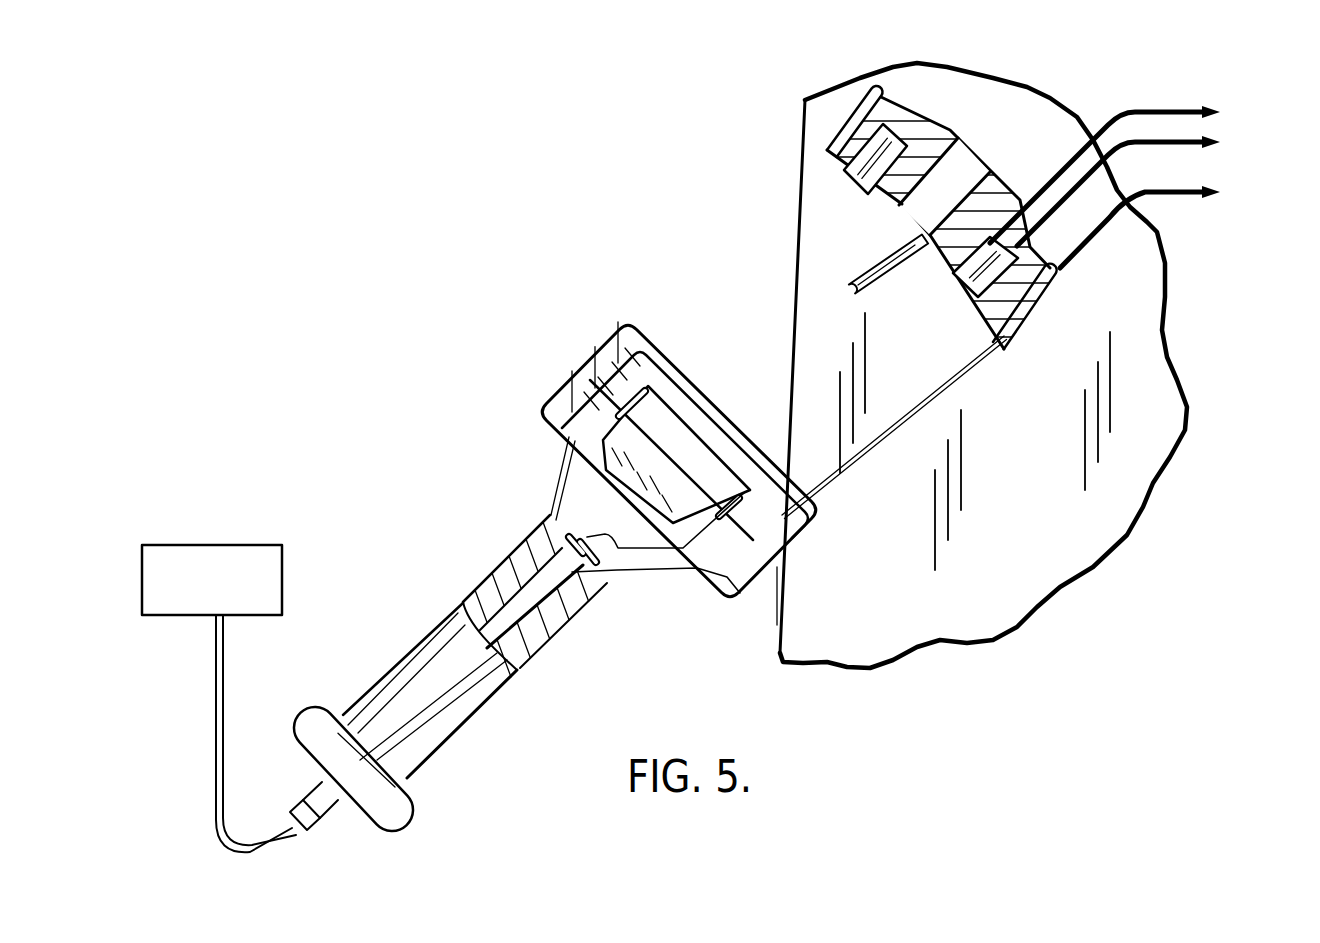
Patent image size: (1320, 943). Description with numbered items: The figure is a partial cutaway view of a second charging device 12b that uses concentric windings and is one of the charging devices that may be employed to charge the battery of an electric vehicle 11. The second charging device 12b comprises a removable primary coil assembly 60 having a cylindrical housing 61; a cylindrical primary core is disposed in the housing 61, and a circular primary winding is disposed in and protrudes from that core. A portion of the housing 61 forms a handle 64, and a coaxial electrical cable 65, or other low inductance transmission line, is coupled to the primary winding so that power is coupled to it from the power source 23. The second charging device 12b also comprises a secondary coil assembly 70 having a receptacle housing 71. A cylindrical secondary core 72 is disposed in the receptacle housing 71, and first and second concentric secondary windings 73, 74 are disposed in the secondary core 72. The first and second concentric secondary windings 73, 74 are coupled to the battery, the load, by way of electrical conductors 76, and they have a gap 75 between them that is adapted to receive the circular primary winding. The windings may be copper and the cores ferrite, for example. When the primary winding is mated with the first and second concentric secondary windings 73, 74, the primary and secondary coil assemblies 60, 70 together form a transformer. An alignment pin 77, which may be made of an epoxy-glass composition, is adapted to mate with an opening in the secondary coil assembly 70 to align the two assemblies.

The electric vehicle 11 is at (794, 51).
The second charging device 12b is at (675, 174).
The power source 23 is at (283, 547).
The removable primary coil assembly 60 is at (551, 313).
The cylindrical housing 61 is at (528, 533).
The handle 64 is at (413, 665).
The coaxial electrical cable 65 is at (303, 803).
The secondary coil assembly 70 is at (865, 201).
The receptacle housing 71 is at (840, 113).
The cylindrical secondary core 72 is at (940, 150).
The first concentric secondary winding 73 is at (843, 171).
The second concentric secondary winding 74 is at (863, 193).
The gap 75 is at (955, 312).
The electrical conductors 76 is at (1170, 192).
The alignment pin 77 is at (843, 298).